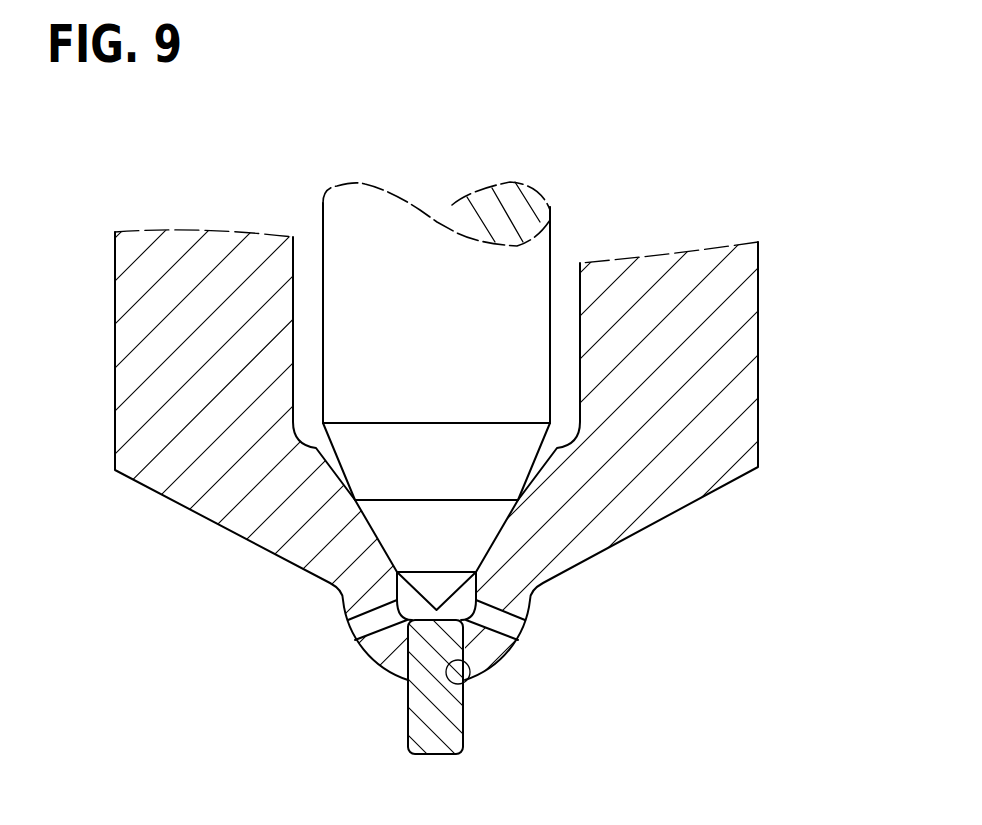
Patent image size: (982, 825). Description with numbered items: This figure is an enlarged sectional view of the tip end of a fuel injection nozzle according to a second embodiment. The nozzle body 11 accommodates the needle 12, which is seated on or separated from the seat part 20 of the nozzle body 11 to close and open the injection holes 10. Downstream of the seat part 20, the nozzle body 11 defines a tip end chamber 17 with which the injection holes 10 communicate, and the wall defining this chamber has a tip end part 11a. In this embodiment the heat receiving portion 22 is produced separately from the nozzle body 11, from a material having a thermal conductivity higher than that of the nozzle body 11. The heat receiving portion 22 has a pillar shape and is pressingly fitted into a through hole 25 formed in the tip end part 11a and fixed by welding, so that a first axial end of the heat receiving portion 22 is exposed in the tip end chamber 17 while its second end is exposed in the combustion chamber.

The injection hole 10 is at (517, 630).
The nozzle body 11 is at (730, 303).
The tip end part 11a is at (405, 650).
The needle 12 is at (500, 295).
The tip end chamber 17 is at (415, 608).
The seat part 20 is at (485, 557).
The heat receiving portion 22 is at (445, 720).
The through hole 25 is at (467, 692).